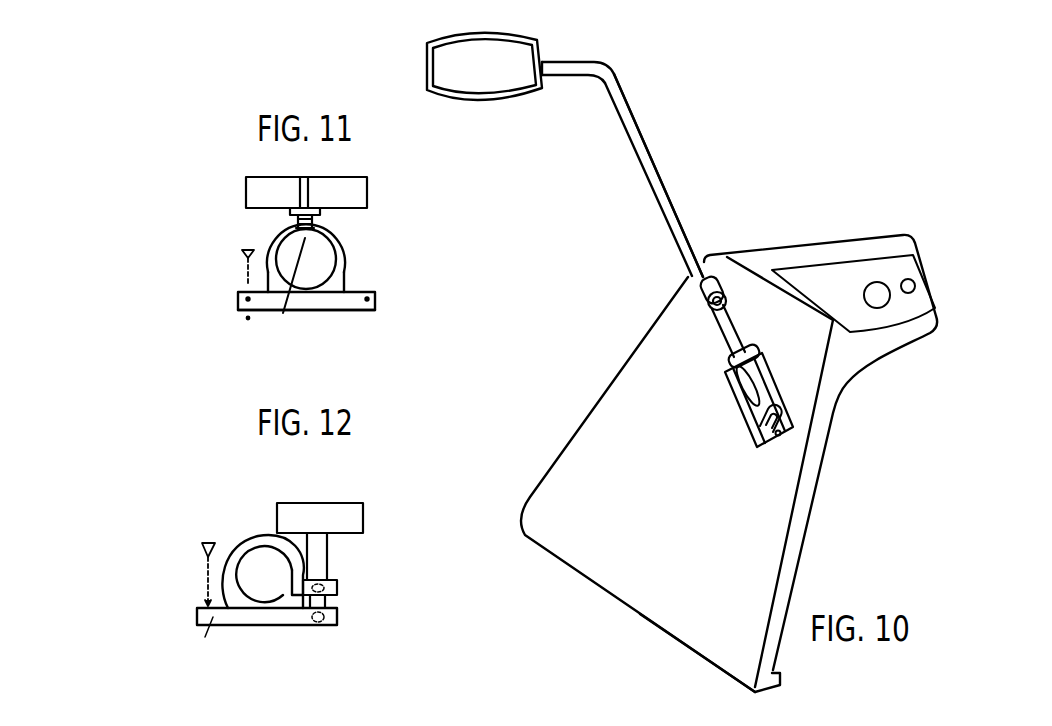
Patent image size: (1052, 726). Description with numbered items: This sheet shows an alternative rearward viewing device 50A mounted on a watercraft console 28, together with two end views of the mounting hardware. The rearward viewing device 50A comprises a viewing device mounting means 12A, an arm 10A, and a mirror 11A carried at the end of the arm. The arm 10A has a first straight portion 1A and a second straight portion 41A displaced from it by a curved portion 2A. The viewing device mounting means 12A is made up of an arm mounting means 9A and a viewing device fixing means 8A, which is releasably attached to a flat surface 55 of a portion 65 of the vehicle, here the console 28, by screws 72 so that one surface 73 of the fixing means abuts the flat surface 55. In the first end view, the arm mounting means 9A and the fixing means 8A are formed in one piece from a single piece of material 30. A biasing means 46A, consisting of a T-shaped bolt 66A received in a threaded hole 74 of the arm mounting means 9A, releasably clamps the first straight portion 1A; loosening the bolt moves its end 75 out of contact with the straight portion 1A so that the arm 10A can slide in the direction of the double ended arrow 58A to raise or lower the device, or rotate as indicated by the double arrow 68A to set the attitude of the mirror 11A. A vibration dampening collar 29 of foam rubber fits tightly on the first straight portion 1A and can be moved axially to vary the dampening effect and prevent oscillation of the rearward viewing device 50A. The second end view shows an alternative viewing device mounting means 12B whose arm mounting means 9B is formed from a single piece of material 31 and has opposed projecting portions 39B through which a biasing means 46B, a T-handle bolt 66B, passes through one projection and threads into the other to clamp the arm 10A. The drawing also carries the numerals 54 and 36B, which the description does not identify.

In FIG. 10, the mirror 11A is at (533, 42).
In FIG. 10, the curved portion 2A is at (611, 78).
In FIG. 10, the first straight portion 1A is at (640, 152).
In FIG. 10, the second straight portion 41A is at (560, 78).
In FIG. 10, the rearward viewing device 50A is at (658, 116).
In FIG. 10, the arm 10A is at (689, 245).
In FIG. 10, the double ended arrow 58A is at (661, 258).
In FIG. 10, the portion of a vehicle 65 is at (785, 186).
In FIG. 10, the console 28 is at (657, 574).
In FIG. 10, the panel edge 54 is at (716, 604).
In FIG. 10, the flat surface 55 is at (698, 360).
In FIG. 10, the vibration dampening collar 29 is at (720, 282).
In FIG. 10, the arm mounting means 9A is at (753, 357).
In FIG. 11, the arm mounting means 9A is at (347, 263).
In FIG. 10, the T-shaped bolt 66A is at (747, 381).
In FIG. 11, the T-shaped bolt 66A is at (287, 195).
In FIG. 10, the viewing device fixing means 8A is at (734, 403).
In FIG. 11, the viewing device fixing means 8A is at (332, 310).
In FIG. 10, the viewing device mounting means 12A is at (740, 420).
In FIG. 10, the double arrow 68A is at (789, 444).
In FIG. 11, the biasing means 46A is at (254, 216).
In FIG. 11, the threaded hole 74 is at (313, 228).
In FIG. 11, the single piece of material 30 is at (340, 248).
In FIG. 11, the end of T-shaped bolt 75 is at (284, 301).
In FIG. 11, the surface of fixing means 73 is at (343, 310).
In FIG. 11, the screws 72 is at (247, 242).
In FIG. 12, the screws 72 is at (208, 542).
In FIG. 12, the T-handle bolt 66B is at (343, 522).
In FIG. 12, the biasing means 46B is at (330, 560).
In FIG. 12, the arm mounting means 9B is at (255, 535).
In FIG. 12, the opposed projecting portions 39B is at (340, 612).
In FIG. 12, the viewing device mounting means 12B is at (184, 622).
In FIG. 12, the single piece of material 31 is at (200, 647).
In FIG. 12, the clamp assembly 36B is at (424, 708).